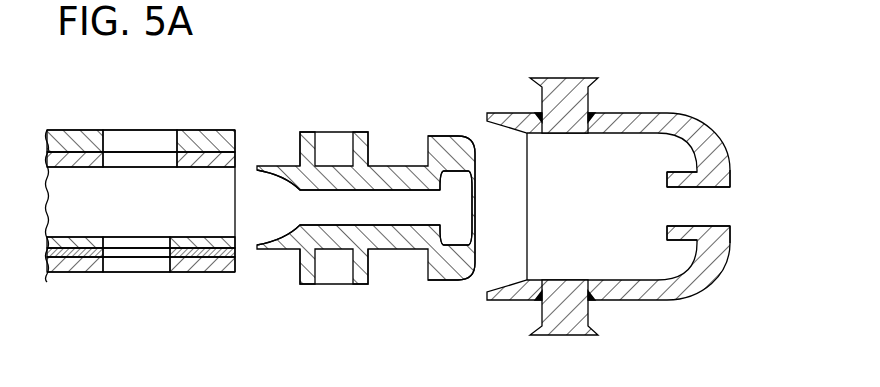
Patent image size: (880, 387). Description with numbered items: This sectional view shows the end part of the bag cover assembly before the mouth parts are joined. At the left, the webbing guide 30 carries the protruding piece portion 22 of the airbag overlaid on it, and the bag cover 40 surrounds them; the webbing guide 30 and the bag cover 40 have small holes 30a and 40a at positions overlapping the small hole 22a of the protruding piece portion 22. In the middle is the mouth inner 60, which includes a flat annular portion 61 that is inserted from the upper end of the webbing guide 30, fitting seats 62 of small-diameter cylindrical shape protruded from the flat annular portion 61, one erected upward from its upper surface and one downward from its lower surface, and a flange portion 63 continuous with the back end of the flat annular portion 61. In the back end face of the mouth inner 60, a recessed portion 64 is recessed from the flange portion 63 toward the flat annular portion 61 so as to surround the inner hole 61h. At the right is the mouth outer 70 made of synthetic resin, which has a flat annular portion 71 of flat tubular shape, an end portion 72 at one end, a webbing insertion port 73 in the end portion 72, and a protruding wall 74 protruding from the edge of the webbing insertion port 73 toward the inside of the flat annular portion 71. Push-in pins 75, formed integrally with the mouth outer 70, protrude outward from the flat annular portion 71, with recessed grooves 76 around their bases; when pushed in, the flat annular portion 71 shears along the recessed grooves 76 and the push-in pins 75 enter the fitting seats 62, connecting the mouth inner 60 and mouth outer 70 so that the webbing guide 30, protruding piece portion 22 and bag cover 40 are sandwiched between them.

The protruding piece portion 22 is at (235, 252).
The small hole 22a is at (127, 258).
The webbing guide 30 is at (201, 166).
The small hole 30a is at (122, 160).
The bag cover 40 is at (211, 132).
The small hole 40a is at (128, 133).
The mouth inner 60 is at (366, 209).
The flat annular portion 61 is at (284, 166).
The inner hole 61h is at (348, 207).
The fitting seat 62 is at (337, 303).
The flange portion 63 is at (420, 137).
The recessed portion 64 is at (460, 169).
The mouth outer 70 is at (632, 209).
The flat annular portion 71 is at (619, 113).
The end portion 72 is at (730, 166).
The webbing insertion port 73 is at (719, 213).
The protruding wall 74 is at (679, 172).
The push-in pin 75 is at (565, 88).
The recessed groove 76 is at (530, 113).